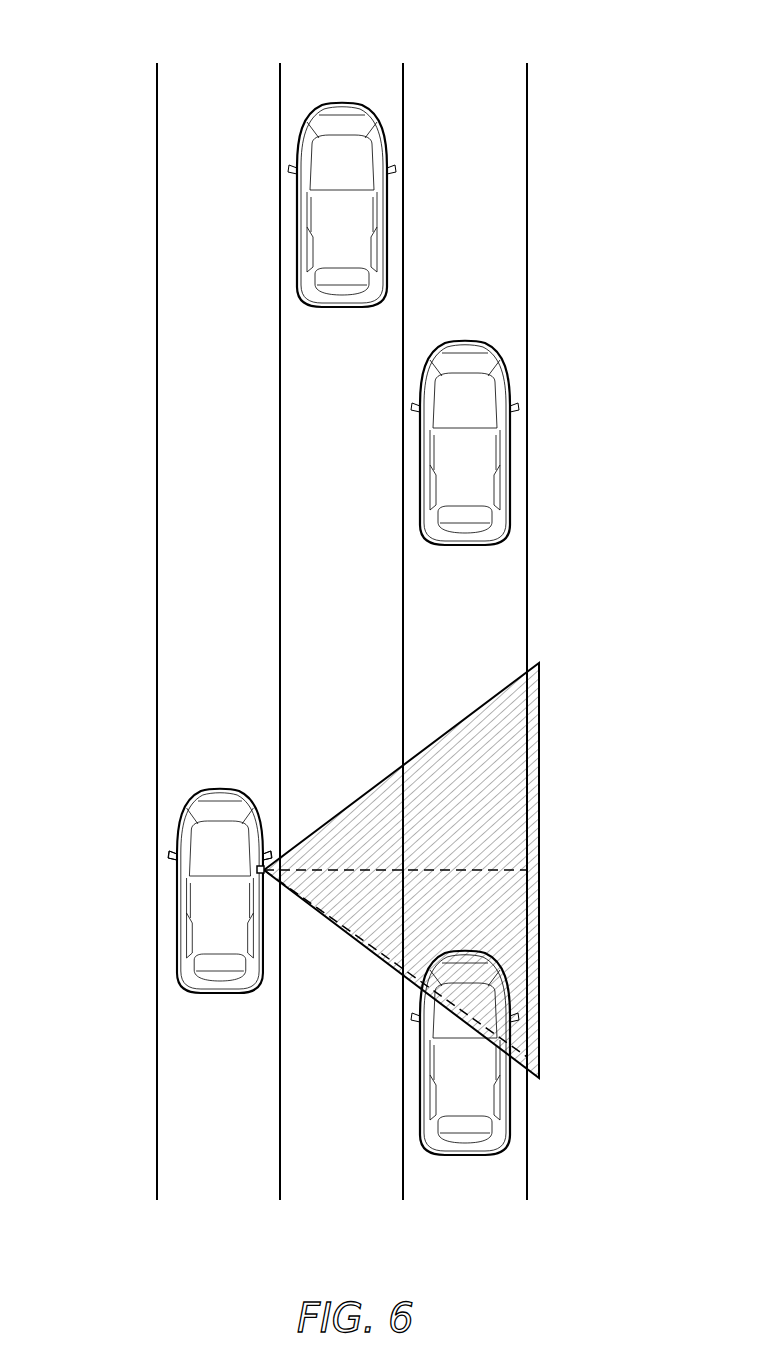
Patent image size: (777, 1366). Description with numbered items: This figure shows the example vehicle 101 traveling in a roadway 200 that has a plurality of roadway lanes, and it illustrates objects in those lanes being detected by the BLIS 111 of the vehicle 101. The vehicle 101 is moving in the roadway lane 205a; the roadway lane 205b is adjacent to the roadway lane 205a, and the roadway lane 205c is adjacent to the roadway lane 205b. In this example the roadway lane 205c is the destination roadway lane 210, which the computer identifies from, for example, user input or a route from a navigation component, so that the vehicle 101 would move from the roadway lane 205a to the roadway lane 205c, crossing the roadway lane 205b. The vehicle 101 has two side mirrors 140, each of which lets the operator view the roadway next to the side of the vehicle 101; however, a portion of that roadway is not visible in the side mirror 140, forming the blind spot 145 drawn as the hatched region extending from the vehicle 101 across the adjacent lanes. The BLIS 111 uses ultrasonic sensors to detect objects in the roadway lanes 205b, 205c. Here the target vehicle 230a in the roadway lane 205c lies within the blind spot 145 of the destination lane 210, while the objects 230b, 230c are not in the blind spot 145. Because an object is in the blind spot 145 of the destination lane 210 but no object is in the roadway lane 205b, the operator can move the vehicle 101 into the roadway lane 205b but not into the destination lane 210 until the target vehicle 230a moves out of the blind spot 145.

The roadway 200 is at (62, 51).
The roadway lane 205a is at (251, 88).
The roadway lane 205b is at (373, 88).
The roadway lane 205c is at (500, 88).
The destination roadway lane 210 is at (508, 142).
The target vehicle 230a is at (509, 1098).
The object 230b is at (509, 390).
The object 230c is at (385, 147).
The vehicle 101 is at (188, 797).
The side mirror 140 is at (175, 857).
The BLIS 111 is at (263, 876).
The blind spot 145 is at (507, 870).